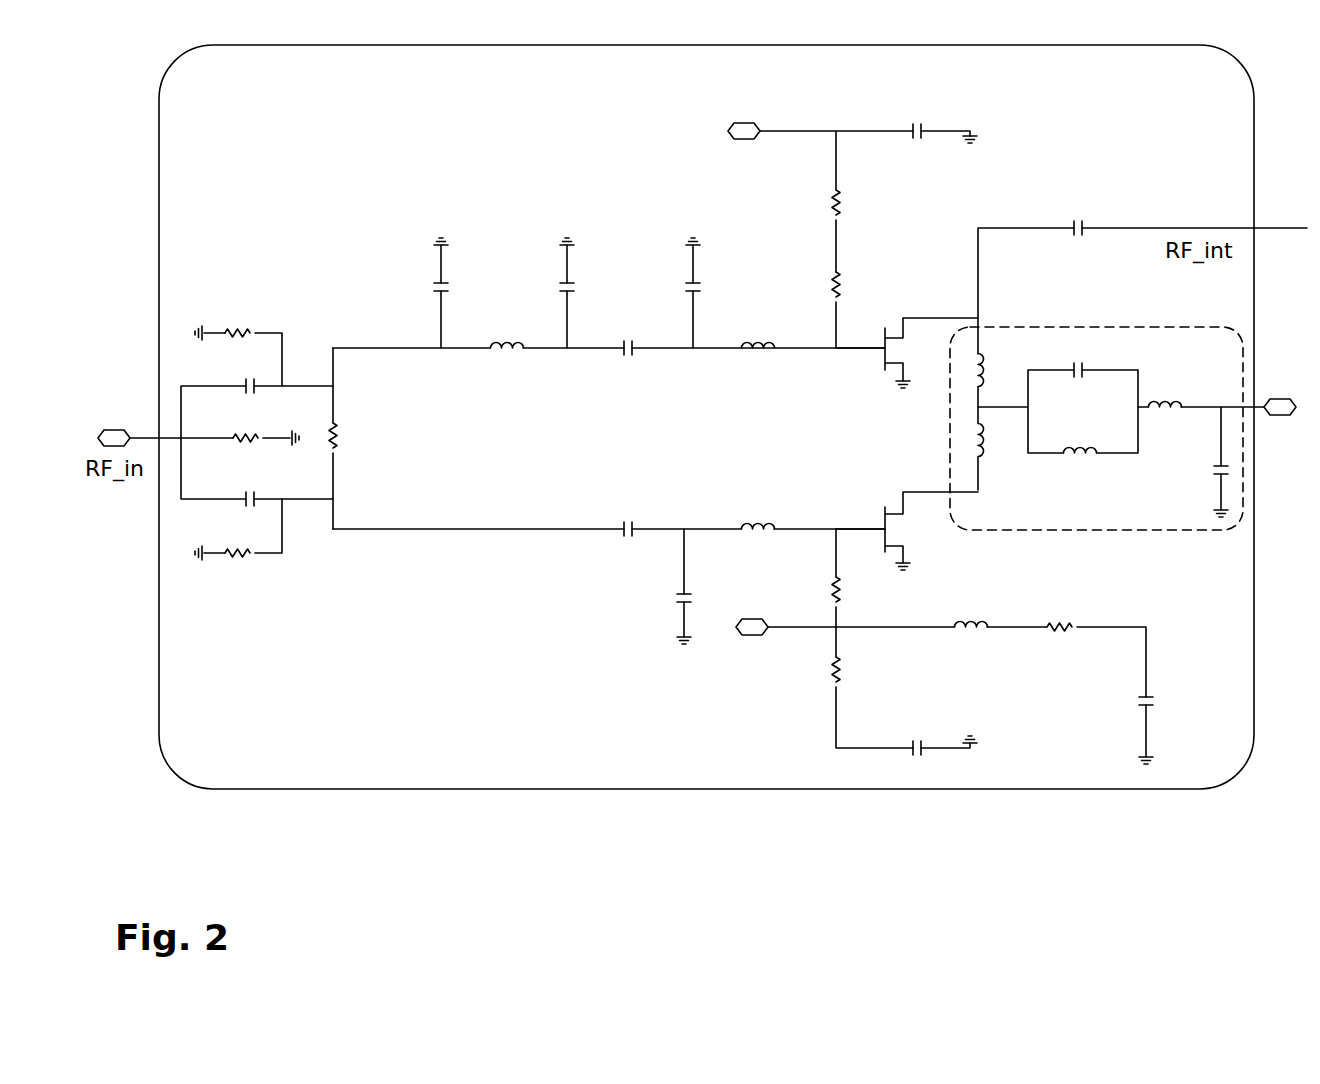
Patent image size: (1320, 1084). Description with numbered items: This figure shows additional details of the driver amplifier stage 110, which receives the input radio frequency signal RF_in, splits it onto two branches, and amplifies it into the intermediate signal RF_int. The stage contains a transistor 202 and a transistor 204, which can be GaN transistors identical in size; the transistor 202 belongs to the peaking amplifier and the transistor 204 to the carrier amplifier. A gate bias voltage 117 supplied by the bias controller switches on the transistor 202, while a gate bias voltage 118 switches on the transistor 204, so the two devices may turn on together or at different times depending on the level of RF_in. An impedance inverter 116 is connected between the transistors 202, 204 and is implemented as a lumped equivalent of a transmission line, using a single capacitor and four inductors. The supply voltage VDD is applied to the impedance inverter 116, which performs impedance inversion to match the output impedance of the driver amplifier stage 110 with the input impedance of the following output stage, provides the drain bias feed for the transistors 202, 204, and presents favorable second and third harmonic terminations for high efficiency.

The driver amplifier stage 110 is at (543, 791).
The impedance inverter 116 is at (1147, 533).
The gate bias voltage 117 is at (846, 221).
The gate bias voltage 118 is at (940, 646).
The transistor 202 is at (877, 360).
The transistor 204 is at (877, 514).